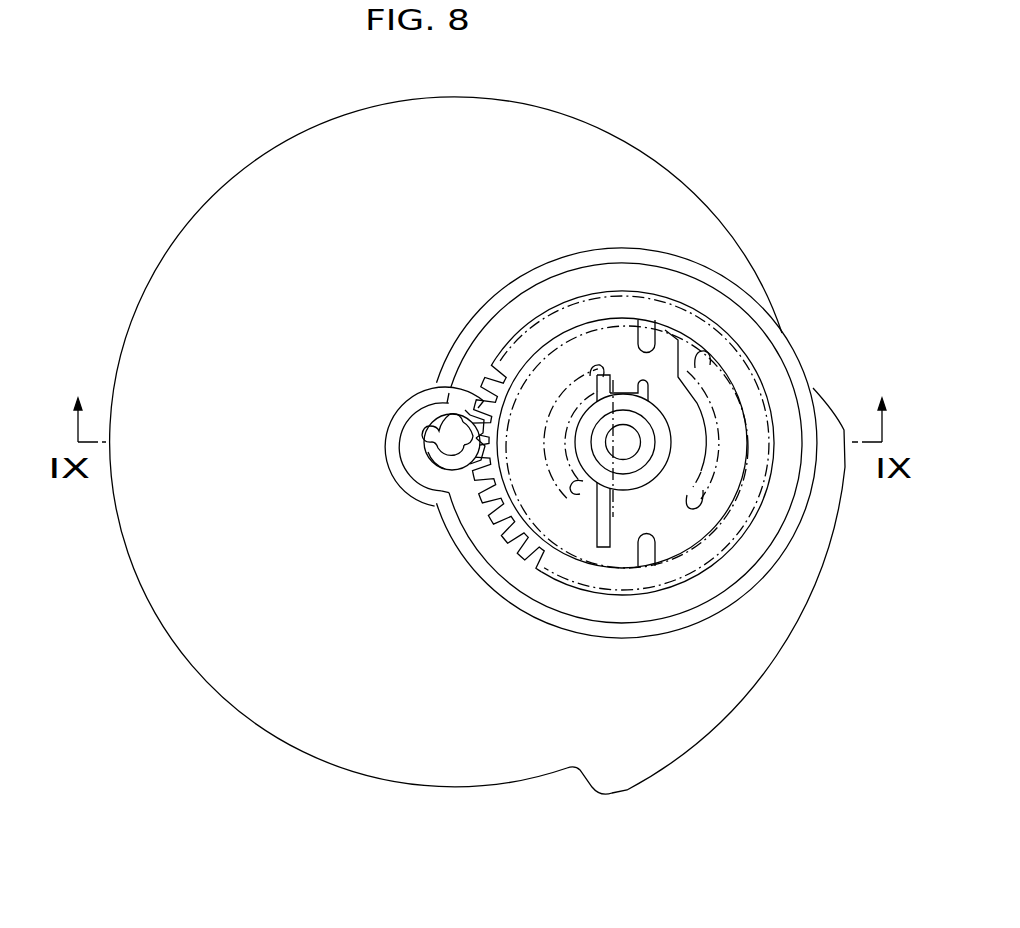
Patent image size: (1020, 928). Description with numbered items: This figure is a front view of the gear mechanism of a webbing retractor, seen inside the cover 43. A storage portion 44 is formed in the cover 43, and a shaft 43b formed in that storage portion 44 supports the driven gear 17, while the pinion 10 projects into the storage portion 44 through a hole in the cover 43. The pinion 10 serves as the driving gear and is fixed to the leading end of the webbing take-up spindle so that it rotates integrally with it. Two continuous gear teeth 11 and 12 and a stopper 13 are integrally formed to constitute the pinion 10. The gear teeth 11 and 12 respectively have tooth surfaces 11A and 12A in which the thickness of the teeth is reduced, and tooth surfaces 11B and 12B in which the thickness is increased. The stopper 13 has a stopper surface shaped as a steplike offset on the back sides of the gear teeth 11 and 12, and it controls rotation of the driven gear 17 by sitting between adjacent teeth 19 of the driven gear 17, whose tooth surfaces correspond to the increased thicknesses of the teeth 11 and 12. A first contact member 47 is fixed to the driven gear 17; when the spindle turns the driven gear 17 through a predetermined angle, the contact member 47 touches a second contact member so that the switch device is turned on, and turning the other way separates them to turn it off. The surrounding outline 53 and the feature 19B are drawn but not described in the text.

The pinion 10 is at (443, 476).
The gear tooth 11 is at (423, 440).
The tooth surface 11A is at (433, 460).
The tooth surface 11B is at (432, 427).
The gear tooth 12 is at (465, 410).
The tooth surface 12A is at (478, 430).
The tooth surface 12B is at (455, 420).
The stopper 13 is at (436, 470).
The driven gear 17 is at (527, 543).
The tooth 19 is at (442, 386).
The housing extension 19B is at (470, 405).
The cover 43 is at (705, 707).
The shaft 43b is at (643, 427).
The storage portion 44 is at (783, 393).
The first contact member 47 is at (710, 458).
The disc 53 is at (220, 712).